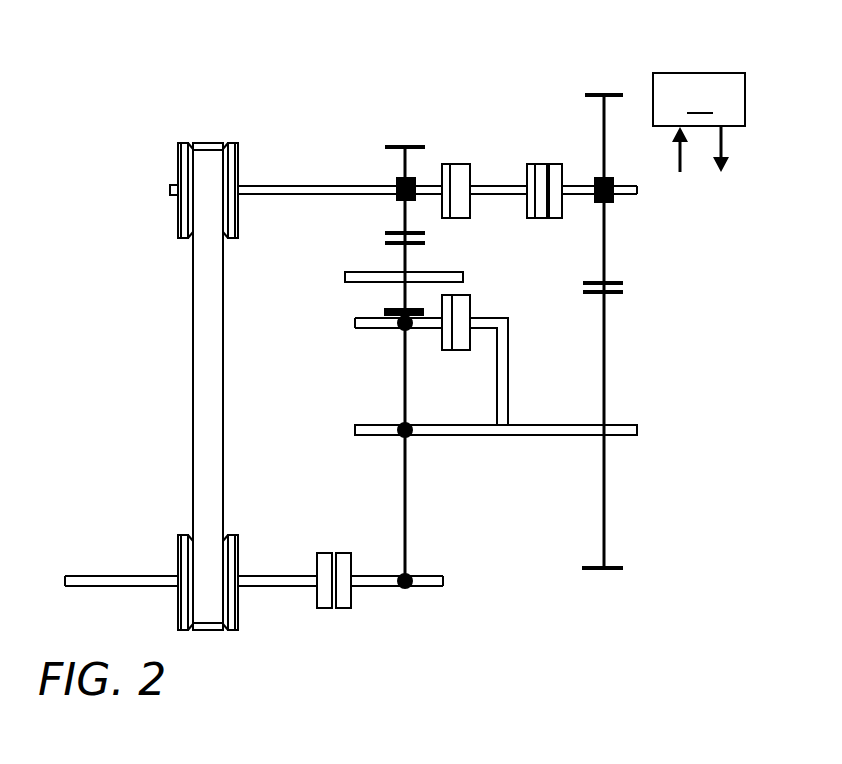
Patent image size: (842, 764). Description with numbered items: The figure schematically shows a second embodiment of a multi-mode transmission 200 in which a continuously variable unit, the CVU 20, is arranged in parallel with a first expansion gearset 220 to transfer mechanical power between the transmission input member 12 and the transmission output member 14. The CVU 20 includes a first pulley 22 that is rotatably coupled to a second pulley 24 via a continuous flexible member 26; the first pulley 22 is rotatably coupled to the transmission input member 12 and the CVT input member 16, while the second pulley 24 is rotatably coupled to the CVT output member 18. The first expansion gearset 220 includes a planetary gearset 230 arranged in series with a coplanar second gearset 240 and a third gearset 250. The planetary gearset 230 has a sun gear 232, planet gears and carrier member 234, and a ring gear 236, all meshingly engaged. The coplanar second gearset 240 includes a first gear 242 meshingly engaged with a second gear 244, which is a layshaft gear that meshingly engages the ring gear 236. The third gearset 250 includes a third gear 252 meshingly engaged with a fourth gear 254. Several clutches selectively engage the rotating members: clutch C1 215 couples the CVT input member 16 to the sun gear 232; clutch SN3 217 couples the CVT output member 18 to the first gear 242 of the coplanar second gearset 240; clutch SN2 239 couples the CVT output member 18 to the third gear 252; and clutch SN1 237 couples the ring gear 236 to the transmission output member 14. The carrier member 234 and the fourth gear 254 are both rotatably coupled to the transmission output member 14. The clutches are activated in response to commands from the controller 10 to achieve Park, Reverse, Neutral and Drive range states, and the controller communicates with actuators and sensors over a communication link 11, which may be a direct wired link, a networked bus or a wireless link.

The multi-mode transmission 200 is at (122, 122).
The controller 10 is at (699, 122).
The communication link 11 is at (724, 143).
The transmission input member 12 is at (107, 575).
The transmission output member 14 is at (620, 425).
The CVT input member 16 is at (292, 587).
The CVT output member 18 is at (340, 185).
The CVU 20 is at (187, 155).
The first pulley 22 is at (178, 548).
The second pulley 24 is at (178, 218).
The continuous flexible member 26 is at (193, 373).
The clutch C1 215 is at (332, 610).
The clutch SN3 217 is at (458, 163).
The first expansion gearset 220 is at (529, 90).
The planetary gearset 230 is at (411, 596).
The sun gear 232 is at (400, 575).
The carrier member 234 is at (402, 425).
The ring gear 236 is at (400, 326).
The clutch SN1 237 is at (472, 308).
The clutch SN2 239 is at (540, 163).
The coplanar second gearset 240 is at (405, 135).
The first gear 242 is at (400, 207).
The second gear 244 is at (397, 268).
The third gearset 250 is at (612, 88).
The third gear 252 is at (606, 258).
The fourth gear 254 is at (606, 342).